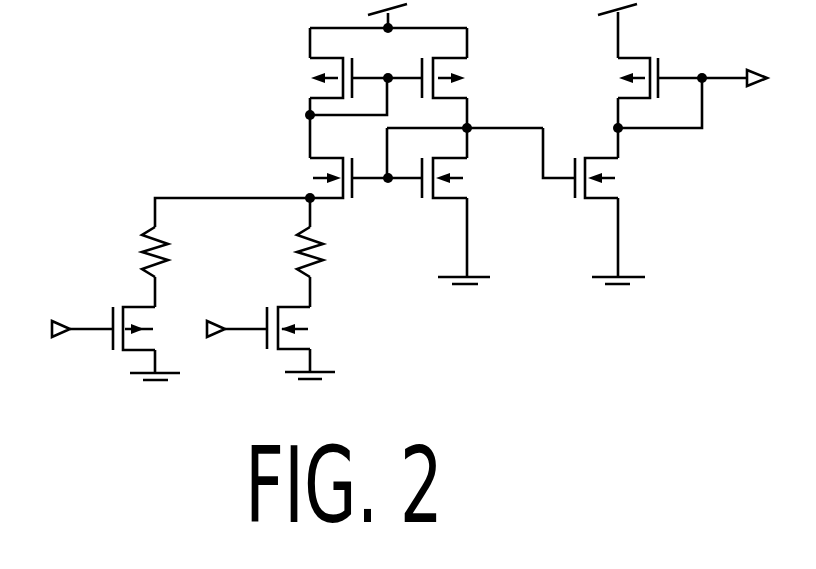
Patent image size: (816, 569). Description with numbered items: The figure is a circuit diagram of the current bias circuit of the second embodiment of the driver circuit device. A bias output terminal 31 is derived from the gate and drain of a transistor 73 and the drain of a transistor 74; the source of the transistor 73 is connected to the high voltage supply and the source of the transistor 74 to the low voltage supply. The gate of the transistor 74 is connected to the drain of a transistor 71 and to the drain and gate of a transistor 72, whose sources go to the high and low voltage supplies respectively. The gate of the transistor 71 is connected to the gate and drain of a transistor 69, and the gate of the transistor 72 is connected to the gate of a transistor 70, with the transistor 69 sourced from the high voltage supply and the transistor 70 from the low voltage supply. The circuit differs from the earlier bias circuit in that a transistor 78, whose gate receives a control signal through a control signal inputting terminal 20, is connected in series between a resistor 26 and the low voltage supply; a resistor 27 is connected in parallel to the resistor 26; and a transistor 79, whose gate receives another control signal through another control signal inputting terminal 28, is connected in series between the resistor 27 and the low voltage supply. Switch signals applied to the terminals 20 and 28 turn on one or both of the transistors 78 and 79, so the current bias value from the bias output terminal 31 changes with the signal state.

The control signal inputting terminal 20 is at (55, 336).
The resistor 26 is at (172, 254).
The resistor 27 is at (322, 256).
The control signal inputting terminal 28 is at (212, 338).
The bias output terminal 31 is at (756, 70).
The transistor 69 is at (310, 88).
The transistor 70 is at (312, 180).
The transistor 71 is at (470, 88).
The transistor 72 is at (470, 186).
The transistor 73 is at (615, 90).
The transistor 74 is at (622, 188).
The transistor 78 is at (150, 322).
The transistor 79 is at (303, 318).